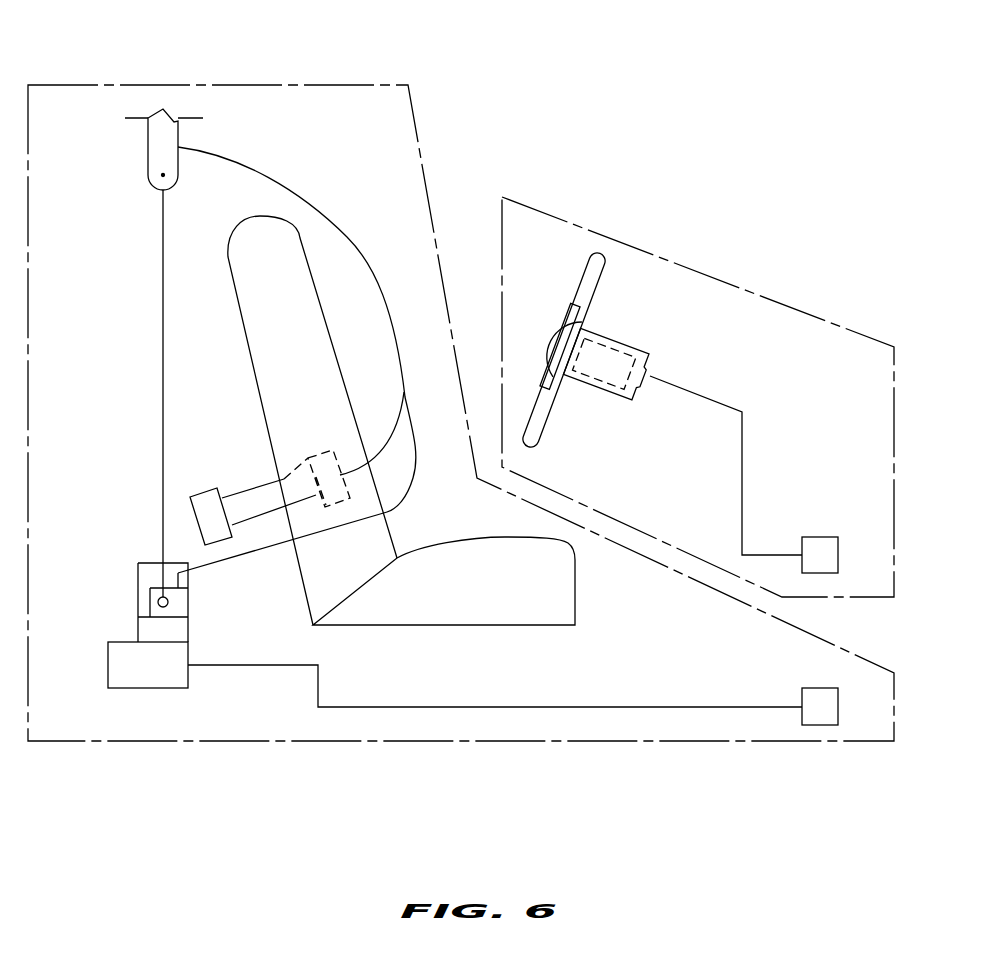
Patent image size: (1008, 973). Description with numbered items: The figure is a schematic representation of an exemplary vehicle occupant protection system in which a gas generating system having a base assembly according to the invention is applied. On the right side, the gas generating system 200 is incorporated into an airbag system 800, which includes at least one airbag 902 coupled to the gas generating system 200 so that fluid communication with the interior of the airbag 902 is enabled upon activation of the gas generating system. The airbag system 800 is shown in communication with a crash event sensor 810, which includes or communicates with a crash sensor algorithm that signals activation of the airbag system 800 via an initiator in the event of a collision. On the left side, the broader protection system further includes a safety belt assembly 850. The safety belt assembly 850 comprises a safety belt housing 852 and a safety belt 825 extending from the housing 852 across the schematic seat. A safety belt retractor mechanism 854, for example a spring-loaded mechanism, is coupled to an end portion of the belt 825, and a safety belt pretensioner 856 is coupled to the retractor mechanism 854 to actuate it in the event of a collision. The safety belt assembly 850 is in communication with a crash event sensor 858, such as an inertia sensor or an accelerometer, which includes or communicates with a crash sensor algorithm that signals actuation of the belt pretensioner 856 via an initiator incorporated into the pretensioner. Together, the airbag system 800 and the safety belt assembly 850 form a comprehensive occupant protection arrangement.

The safety belt assembly 850 is at (461, 379).
The safety belt 825 is at (350, 321).
The safety belt retractor mechanism 854 is at (117, 581).
The safety belt housing 852 is at (146, 617).
The safety belt pretensioner 856 is at (438, 686).
The crash event sensor 858 is at (769, 754).
The airbag system 800 is at (698, 397).
The airbag 902 is at (560, 291).
The gas generating system 200 is at (693, 157).
The crash event sensor 810 is at (844, 504).